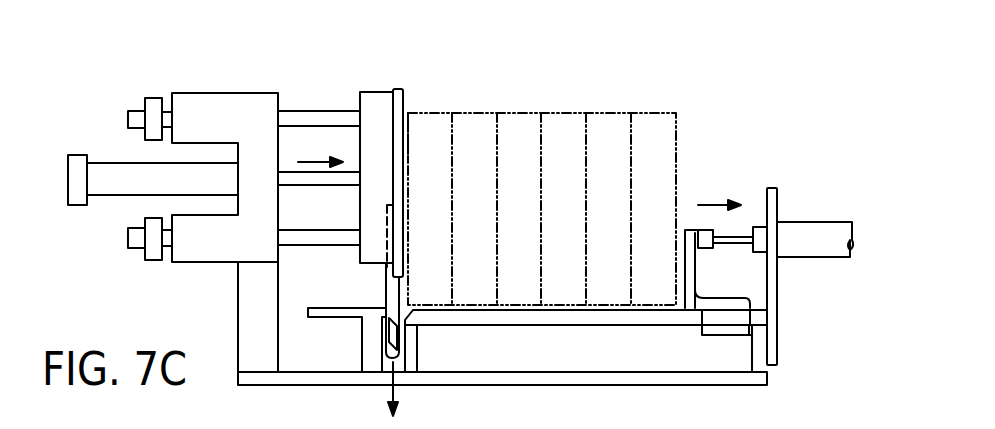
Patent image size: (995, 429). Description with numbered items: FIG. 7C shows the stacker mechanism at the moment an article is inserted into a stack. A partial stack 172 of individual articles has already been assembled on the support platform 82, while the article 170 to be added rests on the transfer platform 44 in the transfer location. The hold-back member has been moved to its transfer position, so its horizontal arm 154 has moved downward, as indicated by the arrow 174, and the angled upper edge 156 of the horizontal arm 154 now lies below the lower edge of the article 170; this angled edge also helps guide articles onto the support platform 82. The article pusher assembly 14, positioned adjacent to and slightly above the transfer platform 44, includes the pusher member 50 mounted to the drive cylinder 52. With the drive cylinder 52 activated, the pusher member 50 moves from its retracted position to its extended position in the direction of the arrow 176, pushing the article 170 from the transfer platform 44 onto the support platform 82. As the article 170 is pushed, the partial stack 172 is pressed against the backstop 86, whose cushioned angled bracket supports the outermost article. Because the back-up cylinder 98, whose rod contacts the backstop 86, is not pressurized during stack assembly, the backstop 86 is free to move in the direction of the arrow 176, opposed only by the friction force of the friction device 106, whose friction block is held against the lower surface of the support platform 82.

The article pusher assembly 14 is at (265, 80).
The drive cylinder 52 is at (104, 170).
The pusher member 50 is at (378, 97).
The arrow 176 is at (310, 160).
The article 170 is at (429, 118).
The partial stack 172 is at (564, 110).
The upper edge 156 is at (392, 316).
The horizontal arm 154 is at (400, 338).
The transfer platform 44 is at (333, 318).
The support platform 82 is at (516, 320).
The friction device 106 is at (723, 334).
The backstop 86 is at (710, 302).
The back-up cylinder 98 is at (808, 230).
The arrow 174 is at (388, 393).